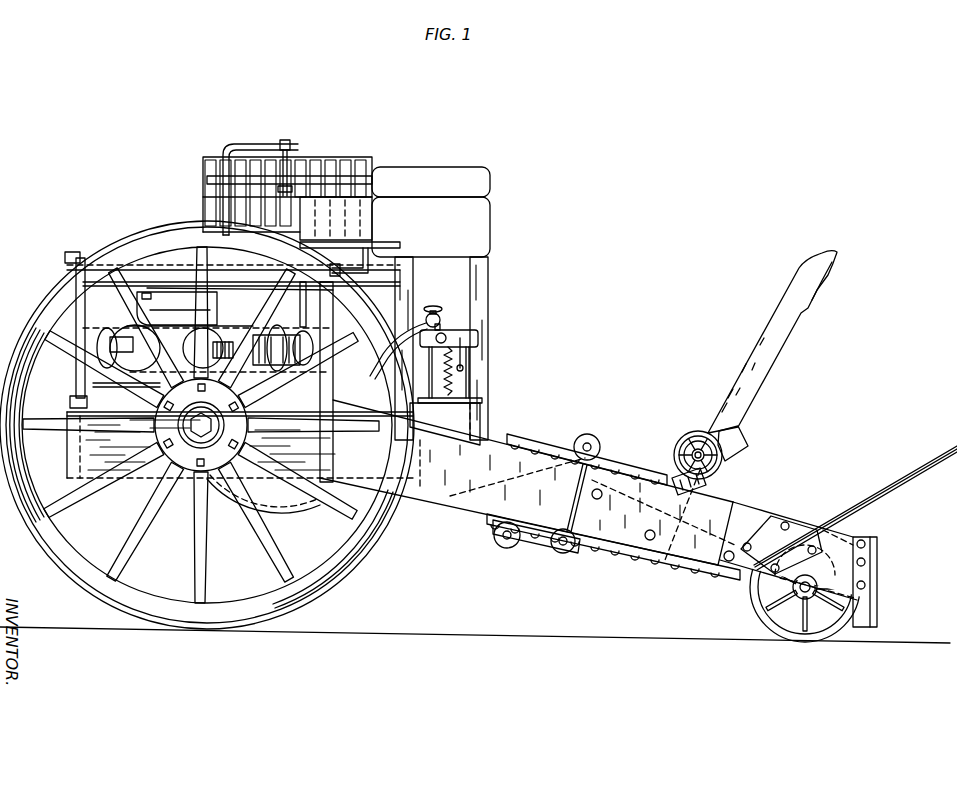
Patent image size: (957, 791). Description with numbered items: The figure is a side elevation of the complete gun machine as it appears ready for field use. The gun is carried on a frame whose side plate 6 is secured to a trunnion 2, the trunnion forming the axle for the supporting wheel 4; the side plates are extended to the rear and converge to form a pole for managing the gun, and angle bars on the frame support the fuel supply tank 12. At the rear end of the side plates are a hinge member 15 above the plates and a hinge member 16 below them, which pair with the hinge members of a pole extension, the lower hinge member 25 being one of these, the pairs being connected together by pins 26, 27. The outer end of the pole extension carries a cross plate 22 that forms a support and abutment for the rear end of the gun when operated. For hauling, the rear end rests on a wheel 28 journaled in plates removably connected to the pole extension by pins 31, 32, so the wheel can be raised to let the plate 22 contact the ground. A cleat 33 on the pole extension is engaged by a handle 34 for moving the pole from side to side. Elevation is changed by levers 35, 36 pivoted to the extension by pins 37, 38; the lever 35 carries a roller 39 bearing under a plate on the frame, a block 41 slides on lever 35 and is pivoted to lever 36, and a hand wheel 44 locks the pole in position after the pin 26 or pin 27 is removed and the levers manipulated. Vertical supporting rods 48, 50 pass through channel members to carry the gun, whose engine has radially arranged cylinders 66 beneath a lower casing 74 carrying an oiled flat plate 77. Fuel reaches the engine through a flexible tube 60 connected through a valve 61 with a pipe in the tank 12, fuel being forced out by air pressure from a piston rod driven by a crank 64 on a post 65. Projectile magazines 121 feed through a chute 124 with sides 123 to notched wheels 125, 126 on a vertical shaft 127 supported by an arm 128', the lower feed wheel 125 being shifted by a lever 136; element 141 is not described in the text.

The trunnion 2 is at (198, 428).
The supporting wheel 4 is at (346, 553).
The side plate 6 is at (446, 504).
The fuel supply tank 12 is at (482, 418).
The hinge member 15 is at (546, 446).
The hinge member 16 is at (541, 530).
The cross plate 22 is at (872, 584).
The hinge member 25 is at (640, 556).
The pin 26 is at (601, 448).
The pin 27 is at (563, 553).
The wheel 28 is at (762, 607).
The pin 31 is at (866, 543).
The pin 32 is at (729, 562).
The cleat 33 is at (798, 531).
The handle 34 is at (858, 508).
The lever 35 is at (745, 446).
The lever 36 is at (756, 392).
The pin 37 is at (603, 494).
The pin 38 is at (656, 535).
The roller 39 is at (507, 548).
The block 41 is at (706, 486).
The hand wheel 44 is at (722, 461).
The vertical supporting rod 48 is at (79, 375).
The vertical supporting rod 50 is at (326, 383).
The flexible tube 60 is at (288, 508).
The valve 61 is at (441, 321).
The driving crank 64 is at (463, 352).
The post 65 is at (471, 372).
The cylinder 66 is at (288, 340).
The lower casing 74 is at (175, 306).
The flat plate 77 is at (304, 285).
The projectile magazine 121 is at (372, 162).
The chute side 123 is at (483, 218).
The chute 124 is at (483, 190).
The lower feed wheel 125 is at (368, 266).
The notched wheel 126 is at (373, 180).
The vertical shaft 127 is at (289, 165).
The arm 128' is at (260, 181).
The lever 136 is at (399, 246).
The fitting 141 is at (364, 279).